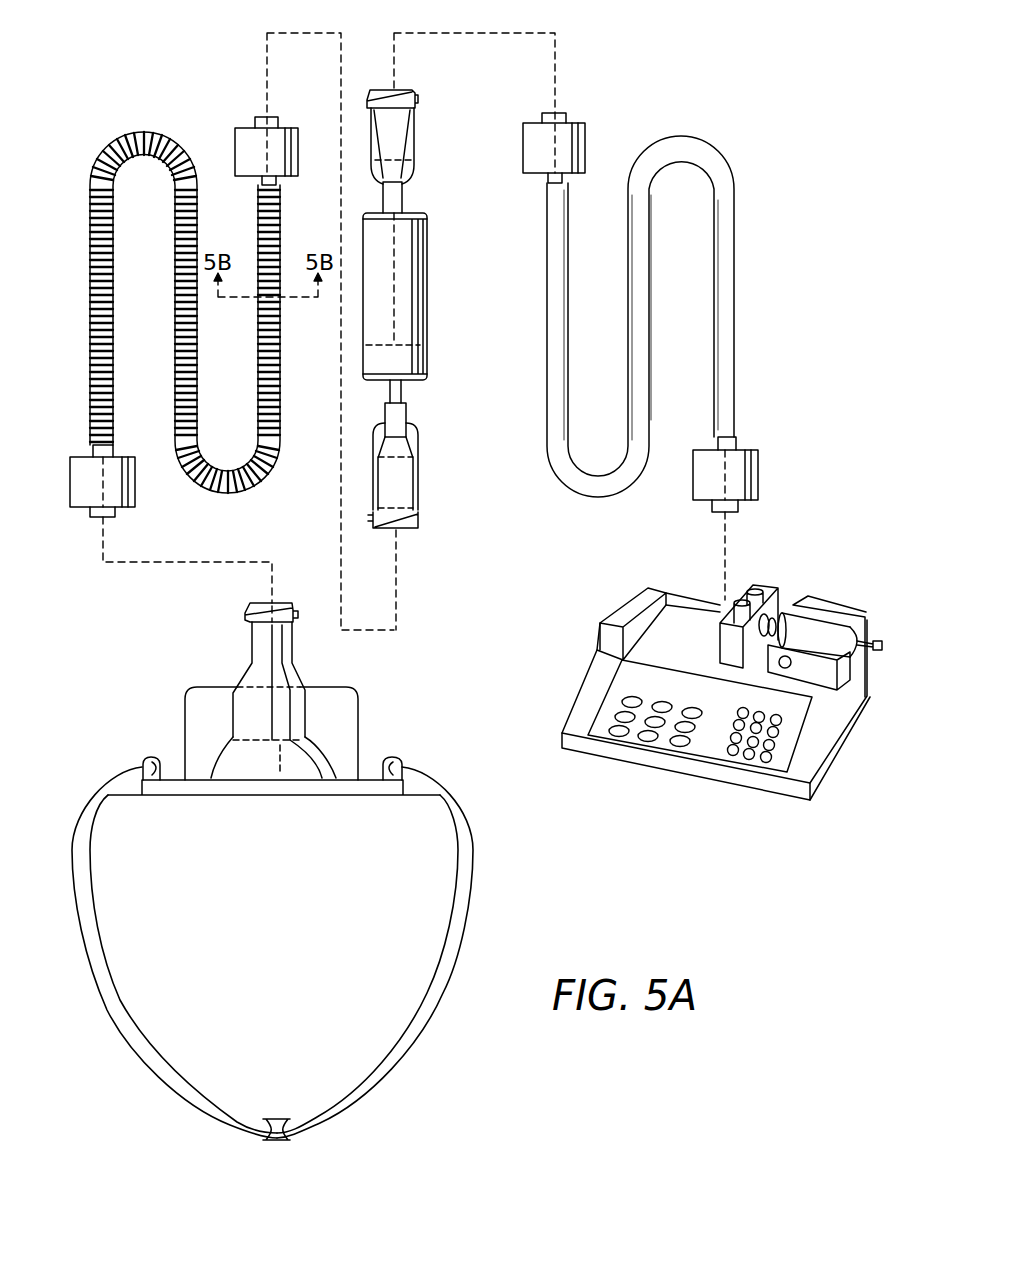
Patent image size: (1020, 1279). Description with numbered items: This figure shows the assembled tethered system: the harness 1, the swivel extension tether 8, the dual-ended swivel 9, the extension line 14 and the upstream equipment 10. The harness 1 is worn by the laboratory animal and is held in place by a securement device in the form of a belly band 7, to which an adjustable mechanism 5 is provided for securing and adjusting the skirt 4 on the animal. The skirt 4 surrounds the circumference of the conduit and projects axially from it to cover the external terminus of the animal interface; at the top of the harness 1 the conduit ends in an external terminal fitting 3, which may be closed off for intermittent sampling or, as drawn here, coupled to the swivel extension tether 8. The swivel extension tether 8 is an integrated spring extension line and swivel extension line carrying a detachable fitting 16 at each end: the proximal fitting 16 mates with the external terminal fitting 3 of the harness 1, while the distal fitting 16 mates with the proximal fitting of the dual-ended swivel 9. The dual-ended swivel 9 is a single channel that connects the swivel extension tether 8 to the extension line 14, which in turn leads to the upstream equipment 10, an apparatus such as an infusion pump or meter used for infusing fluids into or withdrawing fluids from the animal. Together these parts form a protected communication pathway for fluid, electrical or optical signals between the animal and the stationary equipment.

The harness 1 is at (399, 672).
The external terminal fitting 3 is at (265, 602).
The skirt 4 is at (193, 693).
The adjustable mechanism 5 is at (150, 760).
The belly band 7 is at (463, 888).
The swivel extension tether 8 is at (133, 133).
The dual-ended swivel 9 is at (427, 277).
The upstream equipment 10 is at (850, 737).
The extension line 14 is at (735, 233).
The fitting 16 is at (240, 128).